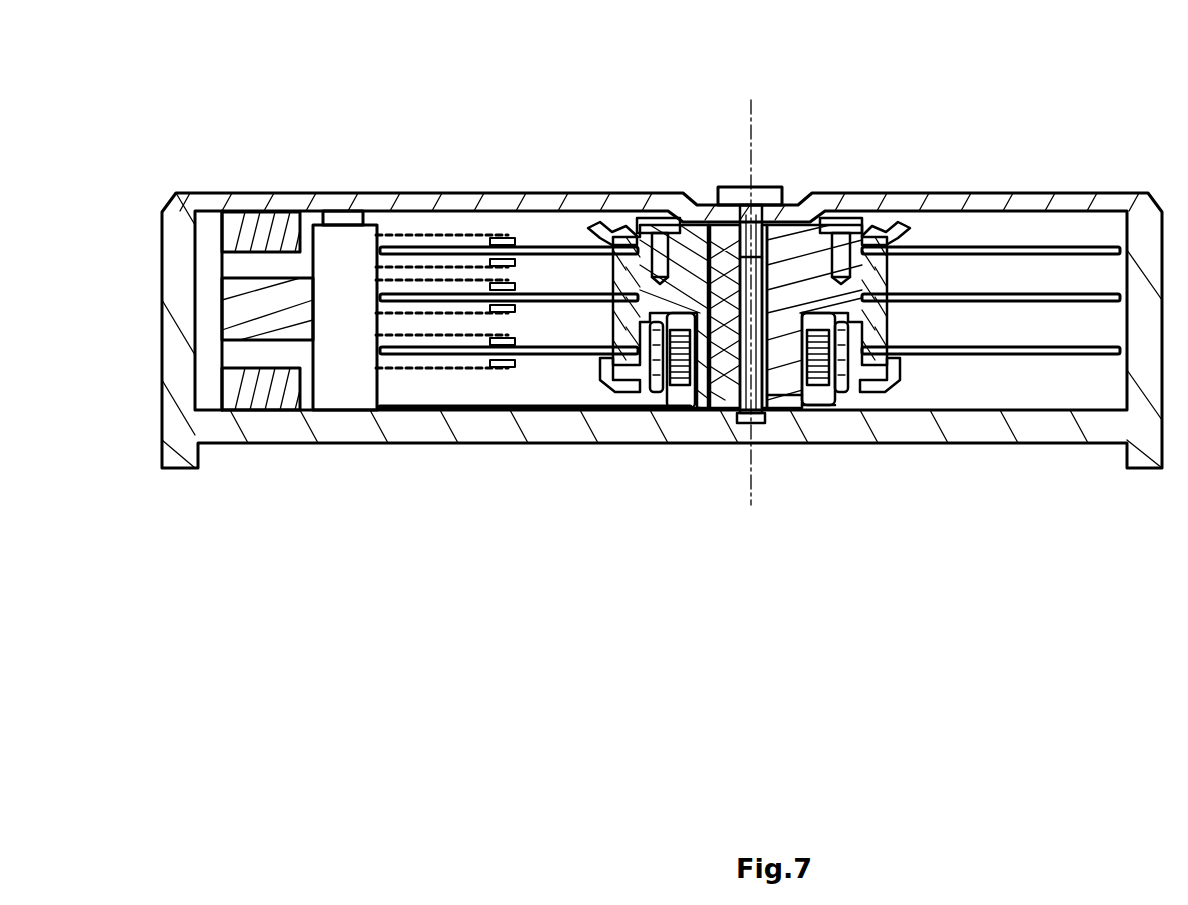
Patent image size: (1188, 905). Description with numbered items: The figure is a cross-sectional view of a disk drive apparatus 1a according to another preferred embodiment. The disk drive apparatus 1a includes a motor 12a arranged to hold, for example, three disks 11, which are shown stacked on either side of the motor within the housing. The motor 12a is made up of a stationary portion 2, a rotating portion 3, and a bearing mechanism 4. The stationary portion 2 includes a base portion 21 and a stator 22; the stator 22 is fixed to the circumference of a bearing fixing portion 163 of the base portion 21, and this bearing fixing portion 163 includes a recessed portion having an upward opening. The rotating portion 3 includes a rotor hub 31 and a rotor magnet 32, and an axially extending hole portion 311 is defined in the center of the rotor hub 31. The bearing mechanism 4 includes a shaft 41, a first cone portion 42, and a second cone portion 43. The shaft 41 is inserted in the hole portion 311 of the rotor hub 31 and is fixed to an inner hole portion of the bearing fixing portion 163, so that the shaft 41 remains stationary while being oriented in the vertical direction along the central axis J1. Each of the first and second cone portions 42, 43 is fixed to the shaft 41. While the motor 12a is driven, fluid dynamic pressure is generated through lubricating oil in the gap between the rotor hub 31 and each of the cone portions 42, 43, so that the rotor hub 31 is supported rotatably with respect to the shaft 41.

The disk drive apparatus 1a is at (138, 152).
The stationary portion 2 is at (878, 508).
The rotating portion 3 is at (614, 511).
The bearing mechanism 4 is at (664, 84).
The disk 11 is at (964, 248).
The motor 12a is at (742, 552).
The base portion 21 is at (858, 430).
The stator 22 is at (818, 388).
The rotor hub 31 is at (665, 300).
The rotor magnet 32 is at (660, 395).
The shaft 41 is at (700, 245).
The first cone portion 42 is at (725, 240).
The second cone portion 43 is at (705, 370).
The bearing fixing portion 163 is at (793, 380).
The hole portion 311 is at (680, 410).
The central axis J1 is at (752, 168).